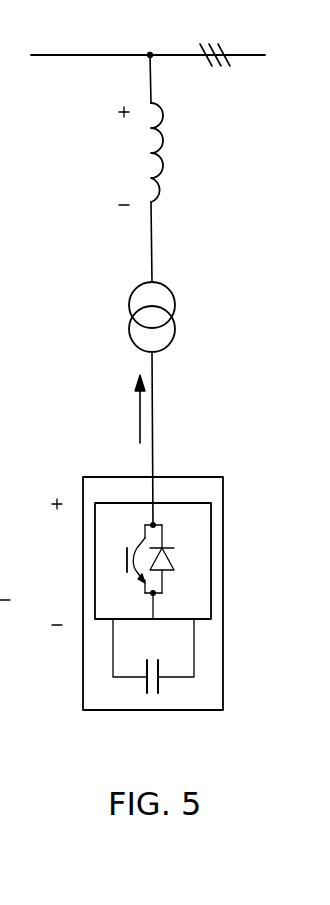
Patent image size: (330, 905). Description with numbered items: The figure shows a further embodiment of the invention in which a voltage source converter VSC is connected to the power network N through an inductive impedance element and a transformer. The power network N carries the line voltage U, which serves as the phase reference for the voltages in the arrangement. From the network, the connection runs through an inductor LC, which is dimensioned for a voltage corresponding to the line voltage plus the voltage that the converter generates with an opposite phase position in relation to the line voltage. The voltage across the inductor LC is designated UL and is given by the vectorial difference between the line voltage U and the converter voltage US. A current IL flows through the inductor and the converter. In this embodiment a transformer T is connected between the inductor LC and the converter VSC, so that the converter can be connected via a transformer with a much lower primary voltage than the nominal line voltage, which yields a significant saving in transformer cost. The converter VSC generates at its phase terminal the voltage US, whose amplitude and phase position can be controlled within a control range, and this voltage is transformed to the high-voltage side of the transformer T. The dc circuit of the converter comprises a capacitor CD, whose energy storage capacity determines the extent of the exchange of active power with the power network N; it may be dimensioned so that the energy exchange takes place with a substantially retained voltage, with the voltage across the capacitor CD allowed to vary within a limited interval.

The line voltage U is at (245, 56).
The power network N is at (78, 55).
The voltage across the inductor UL is at (126, 156).
The inductor LC is at (168, 160).
The transformer T is at (125, 313).
The current IL is at (130, 438).
The voltage of the phase terminal of the converter US is at (105, 562).
The voltage source converter VSC is at (223, 653).
The capacitor CD is at (147, 690).